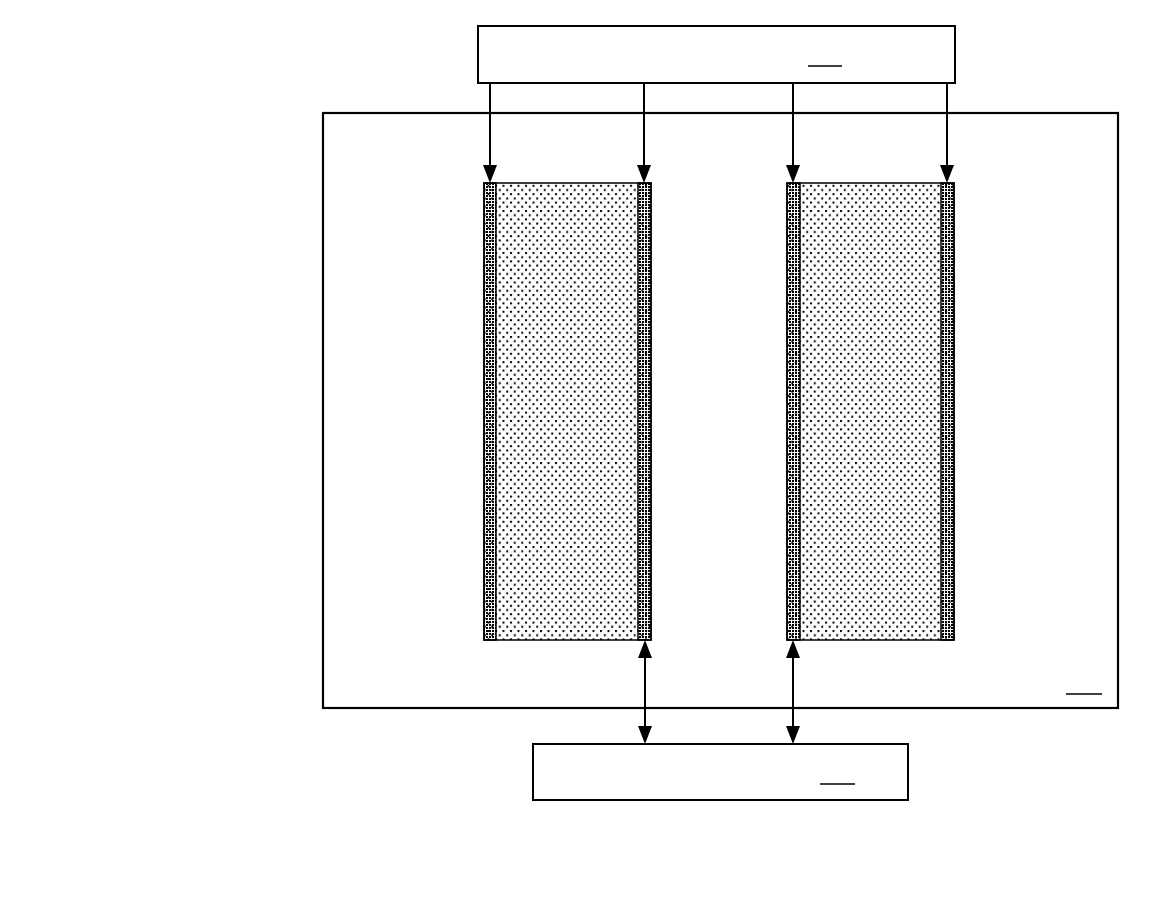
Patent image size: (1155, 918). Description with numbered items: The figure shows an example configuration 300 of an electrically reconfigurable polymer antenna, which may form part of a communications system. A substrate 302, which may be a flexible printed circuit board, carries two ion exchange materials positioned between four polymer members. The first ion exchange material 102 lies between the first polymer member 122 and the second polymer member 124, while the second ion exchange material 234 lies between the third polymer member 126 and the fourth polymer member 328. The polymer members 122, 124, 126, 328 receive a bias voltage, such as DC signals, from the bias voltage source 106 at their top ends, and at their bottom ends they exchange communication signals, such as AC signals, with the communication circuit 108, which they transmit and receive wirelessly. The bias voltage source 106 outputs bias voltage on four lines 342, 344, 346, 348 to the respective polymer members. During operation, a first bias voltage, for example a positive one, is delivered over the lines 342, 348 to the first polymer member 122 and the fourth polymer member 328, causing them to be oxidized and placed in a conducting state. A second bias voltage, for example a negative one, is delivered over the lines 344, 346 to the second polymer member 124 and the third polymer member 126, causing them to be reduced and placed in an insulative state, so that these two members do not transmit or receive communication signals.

The configuration 300 is at (143, 83).
The bias voltage source 106 is at (716, 54).
The substrate 302 is at (720, 410).
The ion exchange material 102 is at (567, 411).
The second ion exchange material 234 is at (868, 411).
The first polymer member 122 is at (484, 330).
The second polymer member 124 is at (651, 497).
The third polymer member 126 is at (787, 330).
The fourth polymer member 328 is at (954, 497).
The line 342 is at (490, 142).
The line 344 is at (643, 142).
The line 346 is at (792, 142).
The line 348 is at (946, 142).
The communication circuit 108 is at (720, 720).